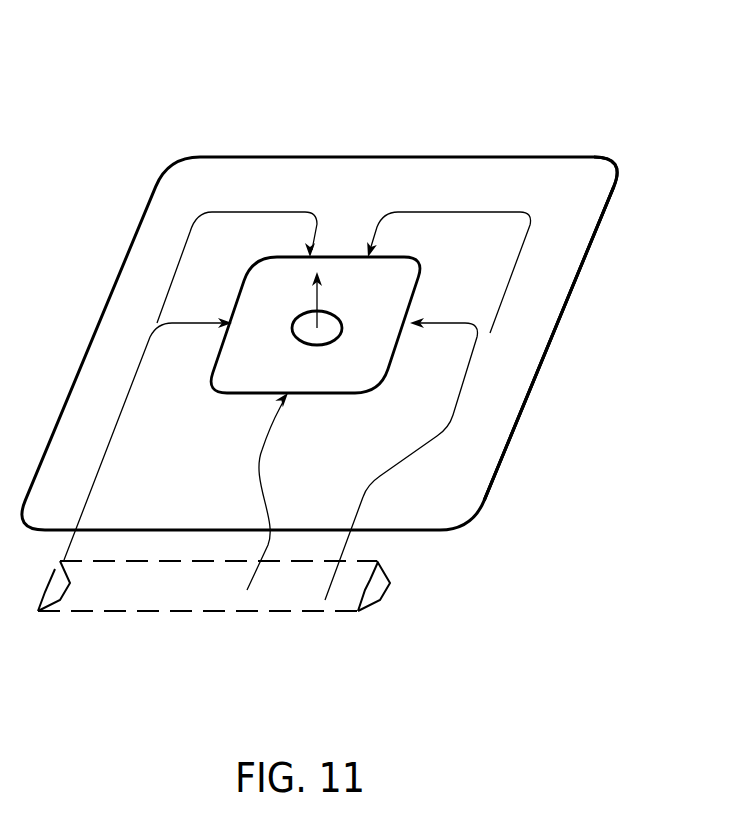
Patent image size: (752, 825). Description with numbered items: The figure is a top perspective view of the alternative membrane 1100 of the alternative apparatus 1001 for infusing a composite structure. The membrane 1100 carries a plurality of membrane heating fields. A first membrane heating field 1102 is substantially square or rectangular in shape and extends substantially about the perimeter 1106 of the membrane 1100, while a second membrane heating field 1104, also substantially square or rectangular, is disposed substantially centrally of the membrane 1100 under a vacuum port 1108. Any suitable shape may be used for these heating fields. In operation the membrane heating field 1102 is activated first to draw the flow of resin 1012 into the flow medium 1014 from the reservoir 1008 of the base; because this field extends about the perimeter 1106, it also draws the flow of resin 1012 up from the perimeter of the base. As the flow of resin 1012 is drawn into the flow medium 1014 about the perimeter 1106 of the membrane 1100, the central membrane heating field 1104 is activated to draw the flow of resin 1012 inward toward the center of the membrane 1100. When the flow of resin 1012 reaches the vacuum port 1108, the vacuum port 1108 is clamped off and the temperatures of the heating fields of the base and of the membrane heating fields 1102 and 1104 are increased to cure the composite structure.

The alternative apparatus 1001 is at (562, 72).
The reservoir 1008 is at (294, 632).
The flow of resin 1012 is at (490, 294).
The flow medium 1014 is at (364, 180).
The alternative membrane 1100 is at (614, 173).
The membrane heating field 1102 is at (591, 243).
The membrane heating field 1104 is at (408, 296).
The perimeter 1106 is at (510, 440).
The vacuum port 1108 is at (342, 332).